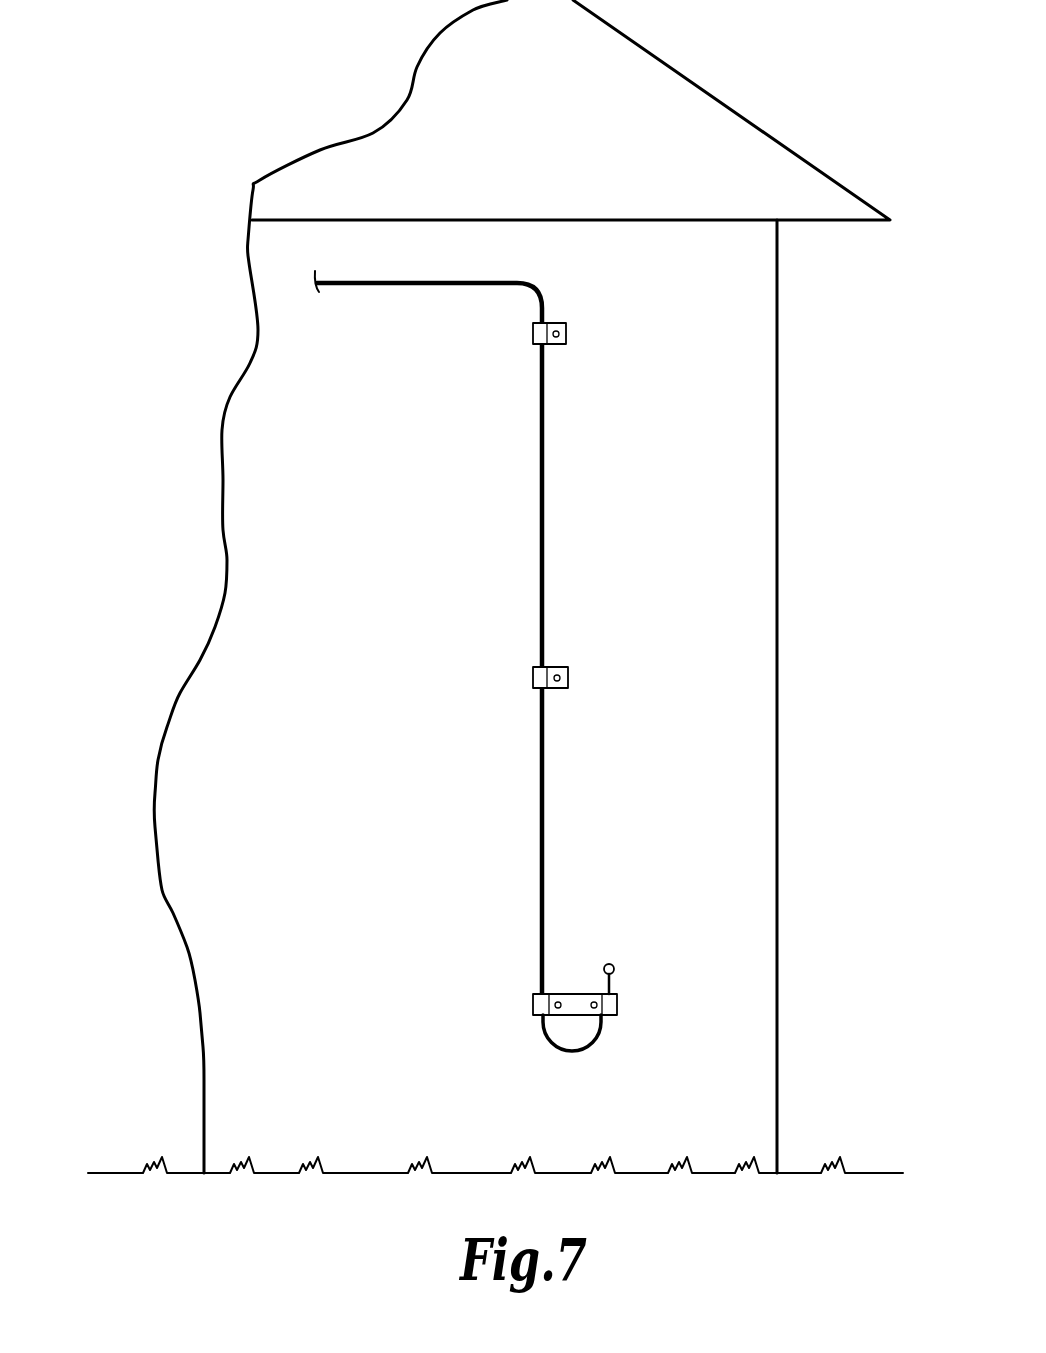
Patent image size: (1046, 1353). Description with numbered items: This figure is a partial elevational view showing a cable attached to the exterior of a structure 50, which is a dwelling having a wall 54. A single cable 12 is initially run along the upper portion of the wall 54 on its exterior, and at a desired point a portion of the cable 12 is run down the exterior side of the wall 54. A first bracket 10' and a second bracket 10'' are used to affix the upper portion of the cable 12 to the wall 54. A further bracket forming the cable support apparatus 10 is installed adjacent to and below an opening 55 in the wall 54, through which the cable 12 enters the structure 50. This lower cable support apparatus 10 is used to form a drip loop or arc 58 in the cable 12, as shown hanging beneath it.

The cable support apparatus 10 is at (631, 993).
The first bracket 10' is at (610, 312).
The second bracket 10'' is at (612, 653).
The cable 12 is at (423, 283).
The structure 50 is at (798, 497).
The wall 54 is at (242, 477).
The opening 55 is at (609, 962).
The drip loop 58 is at (589, 1050).